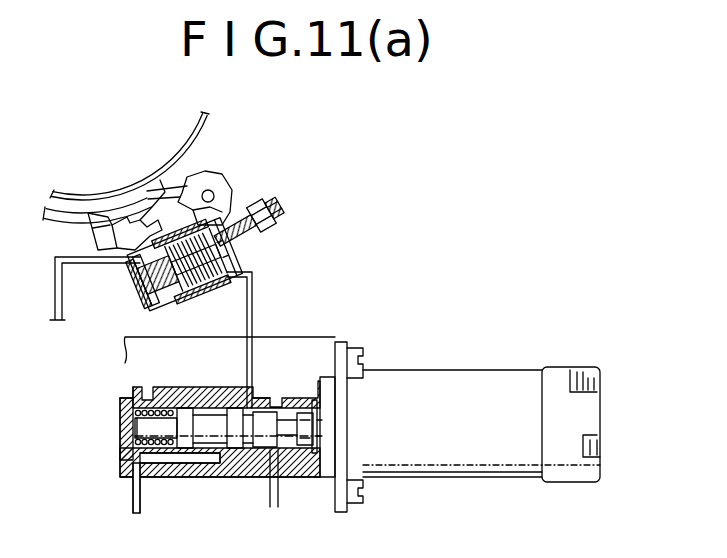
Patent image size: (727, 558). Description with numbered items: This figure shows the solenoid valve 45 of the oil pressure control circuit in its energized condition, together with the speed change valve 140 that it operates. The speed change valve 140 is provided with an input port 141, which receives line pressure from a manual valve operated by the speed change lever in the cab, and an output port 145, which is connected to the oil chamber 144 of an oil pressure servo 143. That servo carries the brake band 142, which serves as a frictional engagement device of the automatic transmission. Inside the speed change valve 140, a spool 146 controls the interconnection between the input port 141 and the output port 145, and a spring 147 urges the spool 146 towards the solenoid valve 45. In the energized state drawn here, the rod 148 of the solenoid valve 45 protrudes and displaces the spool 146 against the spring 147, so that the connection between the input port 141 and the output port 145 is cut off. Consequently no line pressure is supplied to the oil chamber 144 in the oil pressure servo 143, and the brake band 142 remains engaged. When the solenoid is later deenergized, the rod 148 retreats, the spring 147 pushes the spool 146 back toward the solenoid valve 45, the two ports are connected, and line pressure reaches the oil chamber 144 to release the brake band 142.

The brake band 142 is at (208, 124).
The oil pressure servo 143 is at (216, 298).
The oil chamber 144 is at (220, 268).
The speed change valve 140 is at (112, 422).
The spring 147 is at (137, 402).
The spool 146 is at (207, 427).
The rod 148 is at (305, 450).
The output port 145 is at (258, 398).
The input port 141 is at (233, 446).
The solenoid valve 45 is at (480, 398).